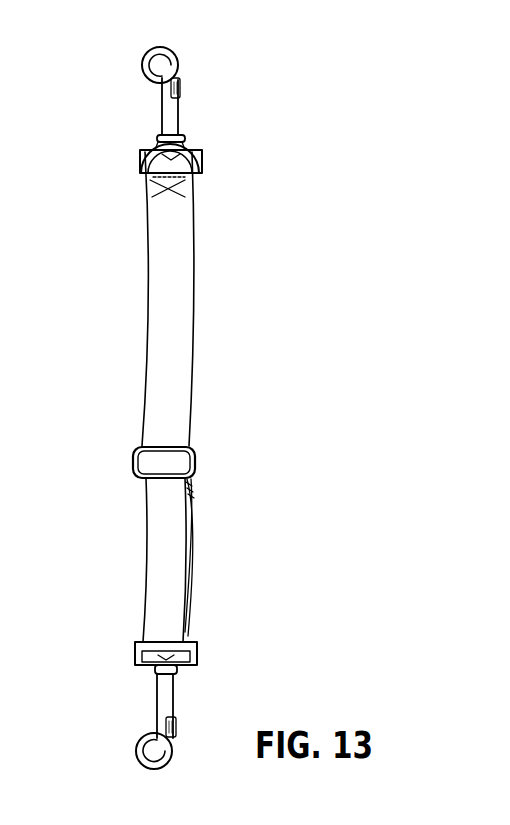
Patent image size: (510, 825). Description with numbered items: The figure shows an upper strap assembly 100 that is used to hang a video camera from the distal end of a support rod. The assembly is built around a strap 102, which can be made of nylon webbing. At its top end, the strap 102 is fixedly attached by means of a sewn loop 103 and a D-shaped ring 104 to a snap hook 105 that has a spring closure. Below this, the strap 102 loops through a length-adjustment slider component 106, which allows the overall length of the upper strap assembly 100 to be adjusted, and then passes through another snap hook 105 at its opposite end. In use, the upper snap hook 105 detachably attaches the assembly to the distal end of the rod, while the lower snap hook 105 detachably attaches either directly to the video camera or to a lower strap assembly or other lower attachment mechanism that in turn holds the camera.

The upper strap assembly 100 is at (342, 158).
The strap 102 is at (153, 297).
The sewn loop 103 is at (190, 182).
The D-shaped ring 104 is at (141, 171).
The snap hook 105 is at (174, 56).
The length-adjustment slider component 106 is at (195, 455).